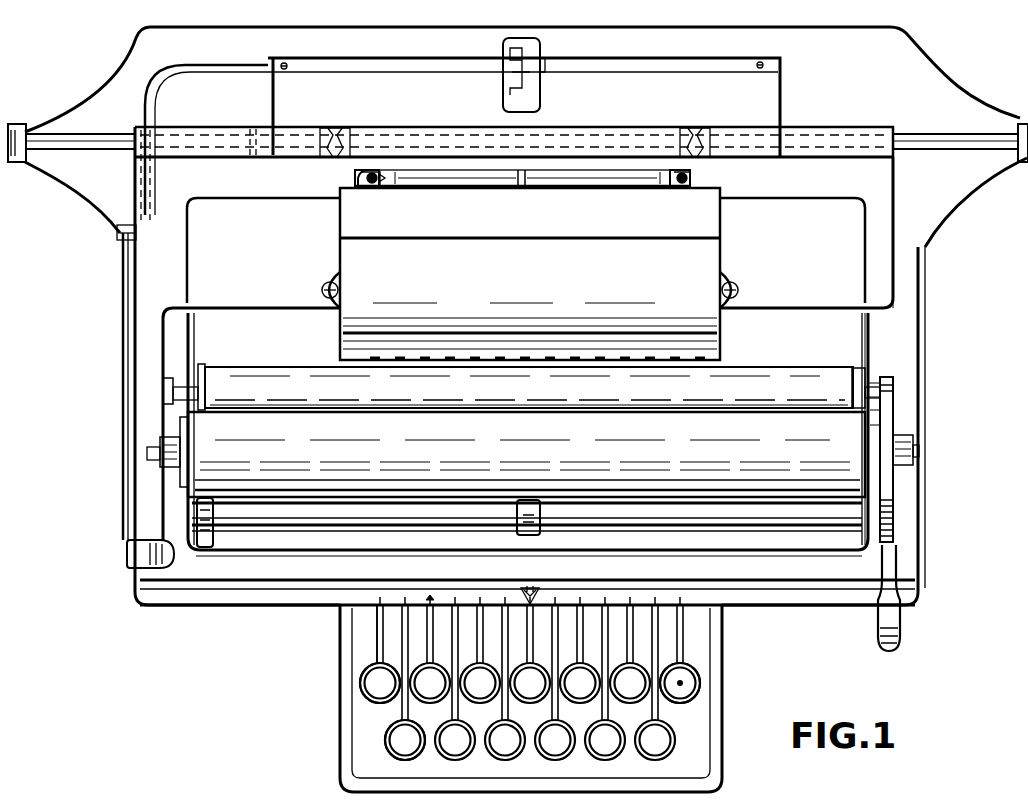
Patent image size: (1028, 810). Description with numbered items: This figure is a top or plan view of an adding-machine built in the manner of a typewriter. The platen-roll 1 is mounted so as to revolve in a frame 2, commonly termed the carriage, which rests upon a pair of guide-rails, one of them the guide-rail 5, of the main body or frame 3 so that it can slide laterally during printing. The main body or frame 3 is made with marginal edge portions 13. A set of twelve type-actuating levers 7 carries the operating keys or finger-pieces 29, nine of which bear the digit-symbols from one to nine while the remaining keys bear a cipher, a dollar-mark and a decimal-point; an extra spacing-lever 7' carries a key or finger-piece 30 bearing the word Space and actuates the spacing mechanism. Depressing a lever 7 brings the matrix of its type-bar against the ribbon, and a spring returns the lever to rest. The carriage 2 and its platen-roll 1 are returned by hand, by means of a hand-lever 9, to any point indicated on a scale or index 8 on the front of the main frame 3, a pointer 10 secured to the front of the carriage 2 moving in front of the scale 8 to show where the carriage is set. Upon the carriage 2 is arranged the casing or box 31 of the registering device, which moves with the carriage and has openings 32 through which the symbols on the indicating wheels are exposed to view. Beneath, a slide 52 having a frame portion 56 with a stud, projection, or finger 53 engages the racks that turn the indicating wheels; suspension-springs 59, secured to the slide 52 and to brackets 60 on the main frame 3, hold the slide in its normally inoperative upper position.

The platen-roll 1 is at (533, 455).
The carriage 2 is at (207, 135).
The main body or frame 3 is at (118, 70).
The guide-rail 5 is at (109, 143).
The type-actuating levers 7 is at (530, 682).
The spacing-lever 7' is at (346, 634).
The scale or index 8 is at (390, 597).
The hand-lever 9 is at (890, 621).
The pointer 10 is at (538, 586).
The marginal edge portions 13 is at (856, 351).
The operating keys or finger-pieces 29 is at (386, 736).
The space key or finger-piece 30 is at (359, 683).
The casing or box 31 is at (530, 274).
The openings 32 is at (403, 363).
The slide 52 is at (566, 184).
The stud, projection, or finger 53 is at (521, 184).
The frame portion 56 is at (460, 182).
The suspension-springs 59 is at (388, 185).
The brackets 60 is at (362, 177).